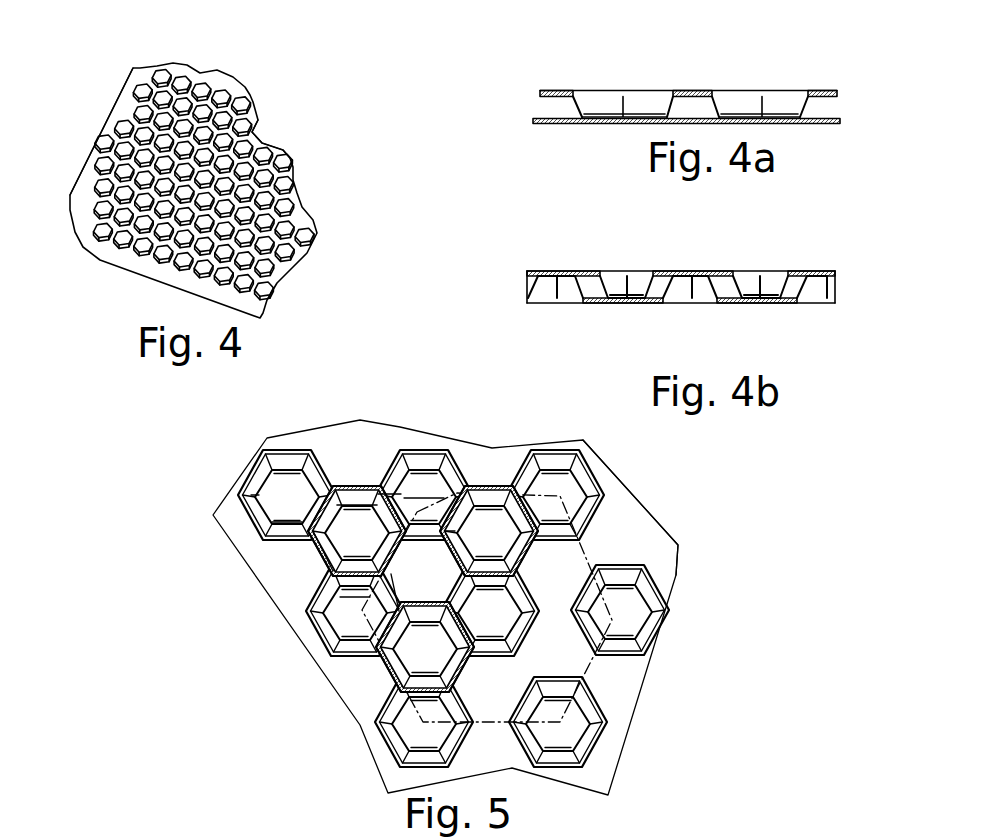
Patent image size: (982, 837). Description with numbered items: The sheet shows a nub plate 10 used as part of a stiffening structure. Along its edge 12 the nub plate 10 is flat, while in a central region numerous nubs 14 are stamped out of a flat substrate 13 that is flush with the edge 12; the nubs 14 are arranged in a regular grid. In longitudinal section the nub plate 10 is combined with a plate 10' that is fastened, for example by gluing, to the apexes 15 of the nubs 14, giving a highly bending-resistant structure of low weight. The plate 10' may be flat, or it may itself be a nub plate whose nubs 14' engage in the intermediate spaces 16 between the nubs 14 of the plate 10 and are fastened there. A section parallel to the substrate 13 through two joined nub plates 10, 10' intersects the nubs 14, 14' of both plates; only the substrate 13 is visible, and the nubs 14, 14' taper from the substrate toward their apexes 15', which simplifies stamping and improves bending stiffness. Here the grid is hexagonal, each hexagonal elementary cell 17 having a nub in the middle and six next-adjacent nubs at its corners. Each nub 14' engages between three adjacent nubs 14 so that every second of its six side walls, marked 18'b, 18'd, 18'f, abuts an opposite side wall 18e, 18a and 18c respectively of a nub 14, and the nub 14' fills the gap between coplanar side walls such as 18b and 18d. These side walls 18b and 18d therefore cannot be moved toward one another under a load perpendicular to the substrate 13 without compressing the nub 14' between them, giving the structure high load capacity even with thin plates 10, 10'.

In FIG. 4, the nub plate 10 is at (163, 190).
In FIG. 4A, the nub plate 10 is at (688, 48).
In FIG. 4B, the nub plate 10 is at (681, 248).
In FIG. 5, the nub plate 10 is at (654, 503).
In FIG. 4A, the plate 10' is at (686, 144).
In FIG. 4B, the plate 10' is at (681, 335).
In FIG. 4, the edge 12 is at (95, 165).
In FIG. 4, the substrate 13 is at (250, 138).
In FIG. 4A, the substrate 13 is at (685, 93).
In FIG. 4B, the substrate 13 is at (683, 272).
In FIG. 5, the substrate 13 is at (445, 607).
In FIG. 4, the nubs 14 is at (204, 157).
In FIG. 4A, the nubs 14 is at (691, 69).
In FIG. 4B, the nubs 14 is at (685, 250).
In FIG. 5, the nubs 14 is at (481, 578).
In FIG. 4B, the nubs of the second nub plate 14' is at (695, 324).
In FIG. 5, the nubs of the second nub plate 14' is at (345, 666).
In FIG. 4A, the apexes 15 is at (691, 69).
In FIG. 4B, the apexes 15 is at (784, 250).
In FIG. 5, the apexes 15' is at (423, 529).
In FIG. 4B, the intermediate spaces 16 is at (662, 287).
In FIG. 5, the hexagonal elementary cell 17 is at (587, 670).
In FIG. 5, the side wall 18a is at (358, 588).
In FIG. 5, the side wall 18b is at (355, 523).
In FIG. 5, the side wall 18c is at (315, 495).
In FIG. 5, the side wall 18d is at (428, 532).
In FIG. 5, the side wall 18e is at (410, 498).
In FIG. 5, the side wall of the second-plate nub 18'b is at (410, 434).
In FIG. 5, the side wall of the second-plate nub 18'd is at (312, 616).
In FIG. 5, the side wall of the second-plate nub 18'f is at (266, 567).